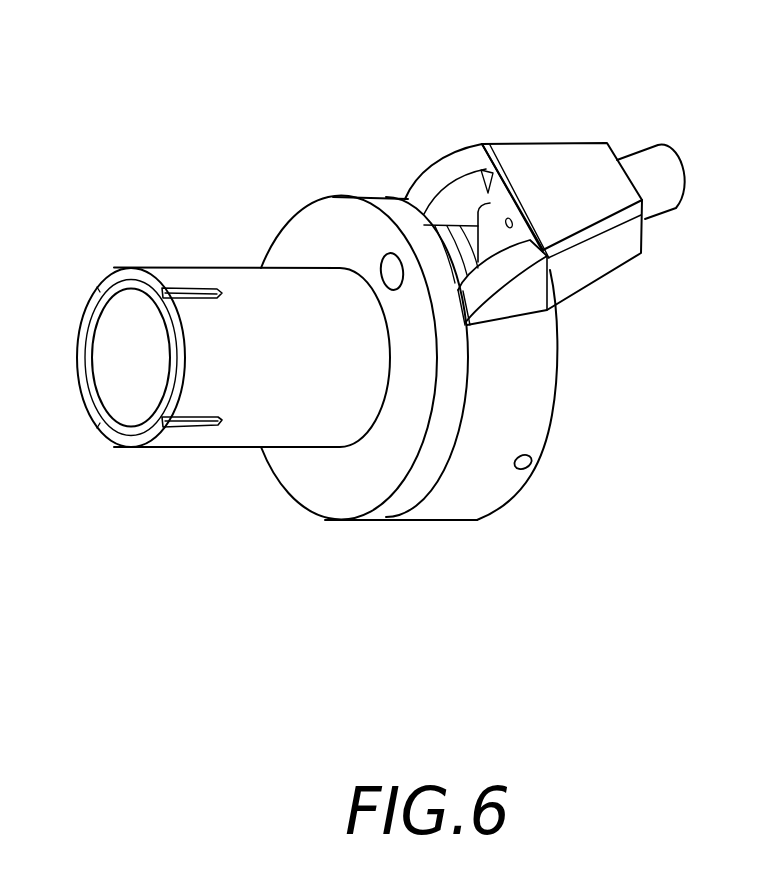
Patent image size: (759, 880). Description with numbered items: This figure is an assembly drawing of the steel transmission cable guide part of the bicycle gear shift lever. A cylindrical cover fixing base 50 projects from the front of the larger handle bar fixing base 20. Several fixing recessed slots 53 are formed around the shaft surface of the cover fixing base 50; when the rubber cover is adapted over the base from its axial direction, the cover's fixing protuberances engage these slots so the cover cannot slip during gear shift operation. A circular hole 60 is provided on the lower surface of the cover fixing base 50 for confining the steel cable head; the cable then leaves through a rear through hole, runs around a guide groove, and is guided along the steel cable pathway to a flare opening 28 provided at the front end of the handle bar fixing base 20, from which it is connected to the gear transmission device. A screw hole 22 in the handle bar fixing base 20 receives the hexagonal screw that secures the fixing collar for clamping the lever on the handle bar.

The handle bar fixing base 20 is at (441, 513).
The screw hole 22 is at (528, 472).
The flare opening 28 is at (507, 214).
The cover fixing base 50 is at (290, 440).
The fixing recessed slots 53 is at (189, 291).
The circular hole 60 is at (383, 258).